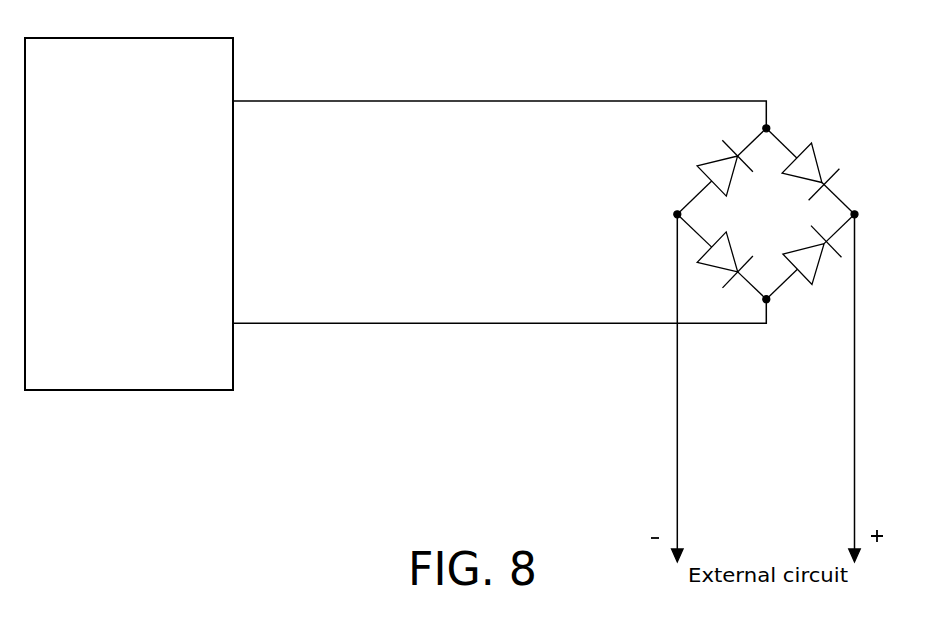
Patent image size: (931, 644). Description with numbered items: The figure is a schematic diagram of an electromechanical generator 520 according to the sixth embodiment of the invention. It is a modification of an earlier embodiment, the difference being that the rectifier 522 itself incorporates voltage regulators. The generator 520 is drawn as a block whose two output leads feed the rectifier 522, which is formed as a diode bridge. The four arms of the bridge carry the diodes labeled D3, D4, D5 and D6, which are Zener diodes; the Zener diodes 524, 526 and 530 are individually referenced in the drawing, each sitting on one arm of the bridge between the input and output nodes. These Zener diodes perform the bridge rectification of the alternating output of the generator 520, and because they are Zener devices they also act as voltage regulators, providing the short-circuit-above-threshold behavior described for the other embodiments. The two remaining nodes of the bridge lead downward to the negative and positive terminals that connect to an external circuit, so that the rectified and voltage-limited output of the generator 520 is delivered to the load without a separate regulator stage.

The electromechanical generator 520 is at (466, 300).
The rectifier 522 is at (778, 138).
The Zener diode 524 is at (818, 160).
The Zener diode 526 is at (697, 167).
The Zener diode 530 is at (727, 233).
The diode D3 is at (699, 147).
The diode D4 is at (810, 256).
The diode D5 is at (699, 282).
The diode D6 is at (834, 147).